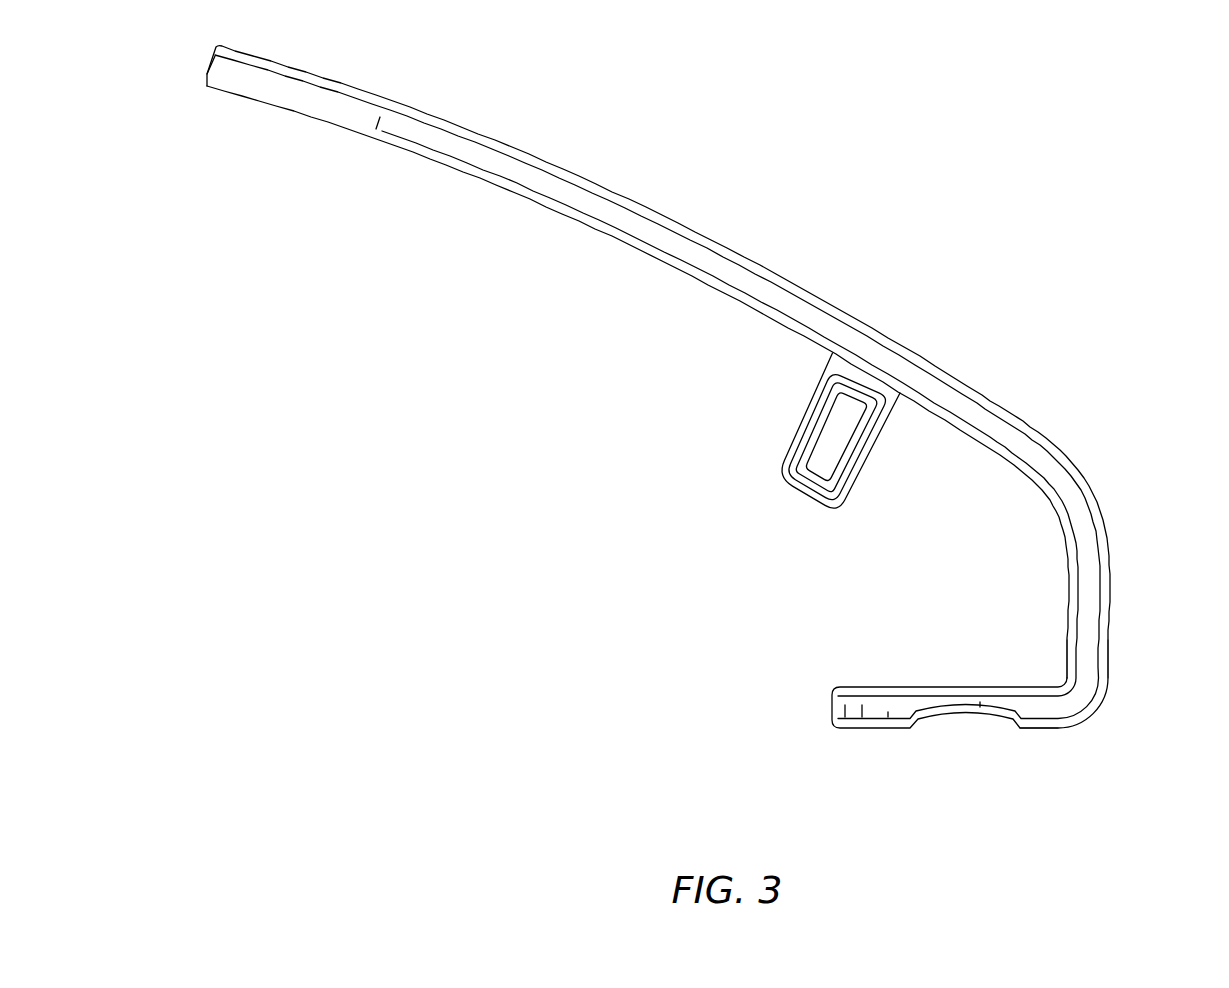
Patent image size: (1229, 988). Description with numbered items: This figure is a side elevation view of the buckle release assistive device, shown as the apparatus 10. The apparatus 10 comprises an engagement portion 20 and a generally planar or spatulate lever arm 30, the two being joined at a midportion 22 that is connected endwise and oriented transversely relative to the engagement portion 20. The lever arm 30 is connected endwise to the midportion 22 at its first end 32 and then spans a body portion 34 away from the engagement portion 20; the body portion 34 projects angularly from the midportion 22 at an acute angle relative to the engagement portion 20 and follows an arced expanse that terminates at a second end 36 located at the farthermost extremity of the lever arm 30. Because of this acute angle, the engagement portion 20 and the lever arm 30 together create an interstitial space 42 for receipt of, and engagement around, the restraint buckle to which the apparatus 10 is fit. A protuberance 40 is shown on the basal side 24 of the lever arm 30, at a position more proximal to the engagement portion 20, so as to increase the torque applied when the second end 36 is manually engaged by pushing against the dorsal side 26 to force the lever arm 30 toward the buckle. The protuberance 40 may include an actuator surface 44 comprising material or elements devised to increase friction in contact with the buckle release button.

The apparatus 10 is at (674, 411).
The engagement portion 20 is at (856, 711).
The midportion 22 is at (1104, 699).
The basal side 24 is at (597, 299).
The dorsal side 26 is at (733, 193).
The lever arm 30 is at (585, 180).
The first end 32 is at (1124, 657).
The body portion 34 is at (822, 296).
The second end 36 is at (216, 80).
The protuberance 40 is at (812, 440).
The interstitial space 42 is at (836, 586).
The actuator surface 44 is at (800, 494).